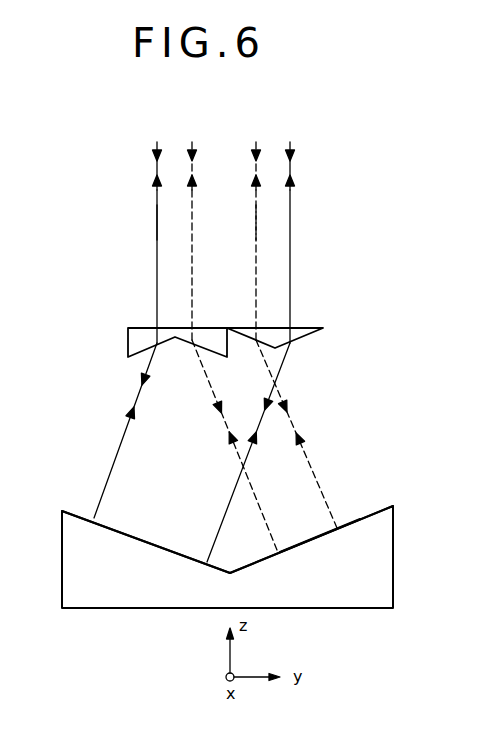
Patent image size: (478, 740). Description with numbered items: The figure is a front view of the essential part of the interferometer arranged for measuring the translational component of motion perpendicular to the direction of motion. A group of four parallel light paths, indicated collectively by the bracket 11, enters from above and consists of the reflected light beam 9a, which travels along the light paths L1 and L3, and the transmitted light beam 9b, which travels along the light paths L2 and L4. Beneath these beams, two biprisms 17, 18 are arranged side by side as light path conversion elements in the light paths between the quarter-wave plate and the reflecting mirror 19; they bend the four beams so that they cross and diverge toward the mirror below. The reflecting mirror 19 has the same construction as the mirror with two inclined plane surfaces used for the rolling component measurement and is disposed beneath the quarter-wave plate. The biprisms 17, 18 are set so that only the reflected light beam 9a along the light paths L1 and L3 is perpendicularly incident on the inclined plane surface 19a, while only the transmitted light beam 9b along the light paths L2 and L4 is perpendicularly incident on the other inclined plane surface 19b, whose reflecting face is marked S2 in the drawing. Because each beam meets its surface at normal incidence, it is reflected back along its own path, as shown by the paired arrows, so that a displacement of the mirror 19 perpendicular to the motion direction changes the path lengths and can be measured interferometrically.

The light beam group 11 is at (308, 140).
The reflected light beam 9a is at (156, 222).
The transmitted light beam 9b is at (256, 228).
The biprism 17 is at (304, 328).
The biprism 18 is at (213, 328).
The reflecting mirror 19 is at (386, 532).
The inclined plane surface 19a is at (148, 545).
The inclined plane surface 19b is at (369, 515).
The reflecting surface S2 is at (322, 537).
The light path L1 is at (125, 354).
The light path L2 is at (282, 359).
The light path L3 is at (265, 376).
The light path L4 is at (234, 370).